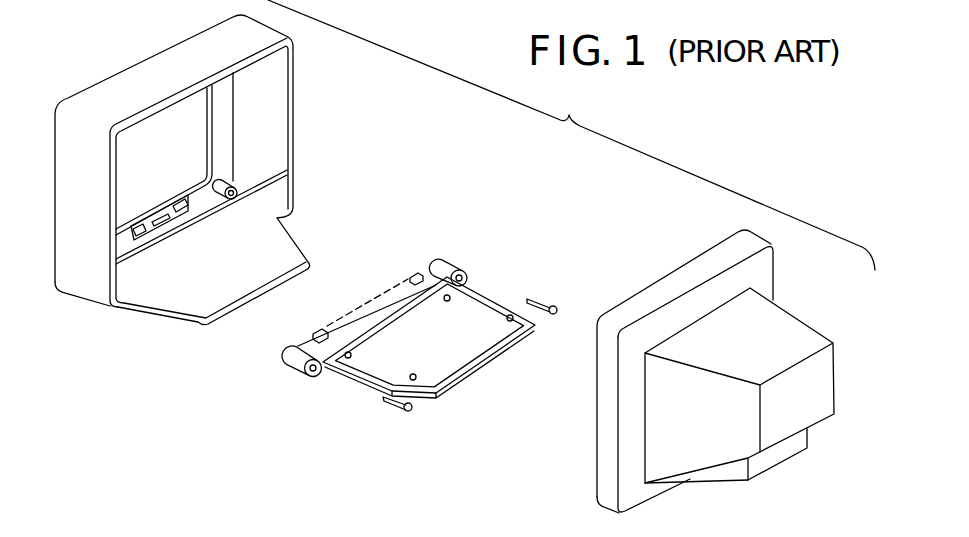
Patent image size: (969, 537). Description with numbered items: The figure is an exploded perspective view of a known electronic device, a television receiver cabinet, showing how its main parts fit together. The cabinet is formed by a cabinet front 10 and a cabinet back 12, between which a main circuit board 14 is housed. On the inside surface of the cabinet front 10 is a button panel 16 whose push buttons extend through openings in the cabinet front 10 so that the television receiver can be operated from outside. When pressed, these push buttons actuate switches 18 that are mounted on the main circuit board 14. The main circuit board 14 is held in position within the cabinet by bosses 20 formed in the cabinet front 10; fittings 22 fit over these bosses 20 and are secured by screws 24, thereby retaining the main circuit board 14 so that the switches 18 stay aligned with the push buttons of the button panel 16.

The cabinet front 10 is at (73, 284).
The cabinet back 12 is at (793, 316).
The main circuit board 14 is at (341, 383).
The button panel 16 is at (140, 224).
The switches 18 is at (414, 273).
The bosses 20 is at (221, 181).
The fittings 22 is at (286, 372).
The screws 24 is at (395, 407).